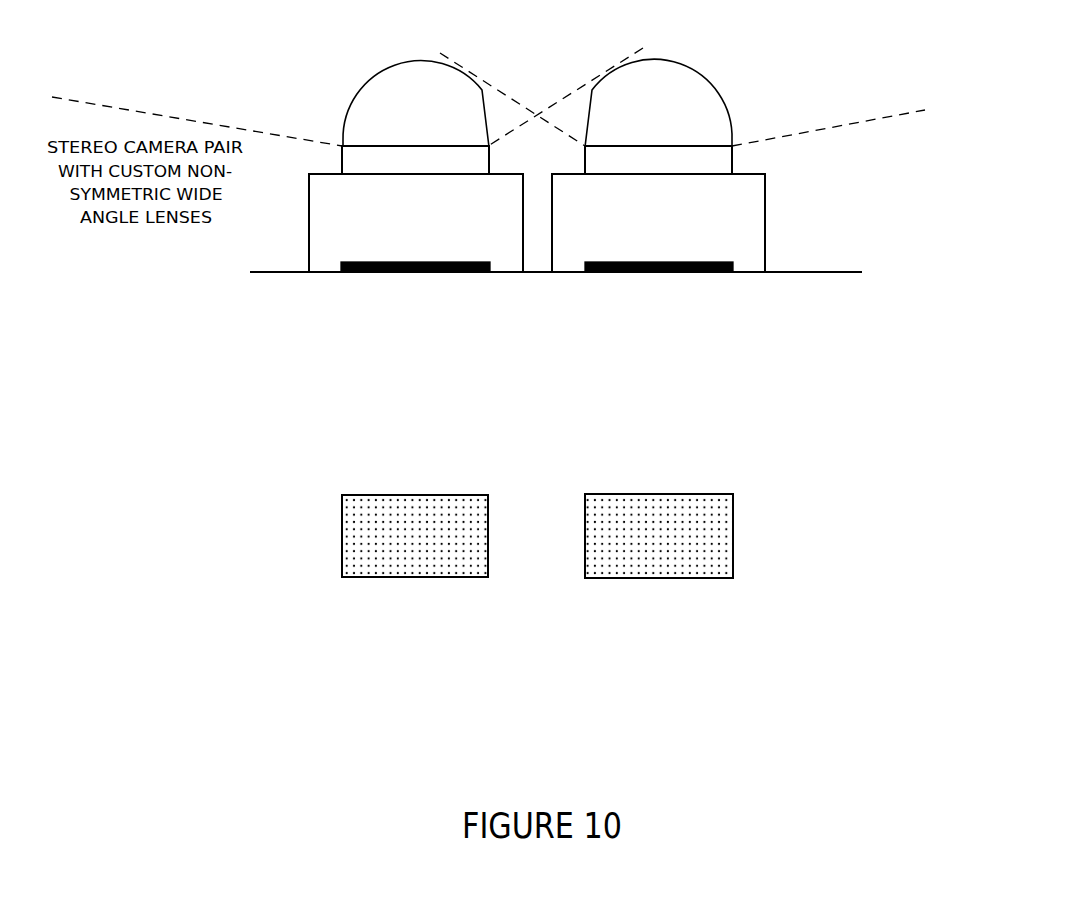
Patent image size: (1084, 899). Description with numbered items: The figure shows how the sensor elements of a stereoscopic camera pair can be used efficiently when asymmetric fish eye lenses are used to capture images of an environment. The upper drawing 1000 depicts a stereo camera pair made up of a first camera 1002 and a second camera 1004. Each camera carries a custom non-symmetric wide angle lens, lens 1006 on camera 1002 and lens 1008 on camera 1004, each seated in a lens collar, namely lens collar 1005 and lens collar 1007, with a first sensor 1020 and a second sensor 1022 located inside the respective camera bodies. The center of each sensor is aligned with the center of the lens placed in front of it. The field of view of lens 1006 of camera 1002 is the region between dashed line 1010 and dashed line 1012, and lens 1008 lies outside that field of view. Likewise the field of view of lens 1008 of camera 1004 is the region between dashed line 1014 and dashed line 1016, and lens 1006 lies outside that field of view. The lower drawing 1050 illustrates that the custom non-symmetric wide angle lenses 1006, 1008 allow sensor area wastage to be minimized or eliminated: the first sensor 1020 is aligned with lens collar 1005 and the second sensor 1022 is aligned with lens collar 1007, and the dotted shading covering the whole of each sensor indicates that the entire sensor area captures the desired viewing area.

The drawing 1000 is at (246, 30).
The camera 1002 is at (310, 222).
The camera 1004 is at (765, 245).
The lens collar 1005 is at (342, 165).
The custom non-symmetric wide angle lens 1006 is at (355, 97).
The lens collar 1007 is at (730, 162).
The custom non-symmetric wide angle lens 1008 is at (725, 112).
The dashed line 1010 is at (73, 100).
The dashed line 1012 is at (615, 63).
The dashed line 1014 is at (460, 68).
The dashed line 1016 is at (902, 115).
The sensor S1 1020 is at (382, 250).
The sensor S2 1022 is at (683, 250).
The drawing 1050 is at (278, 458).